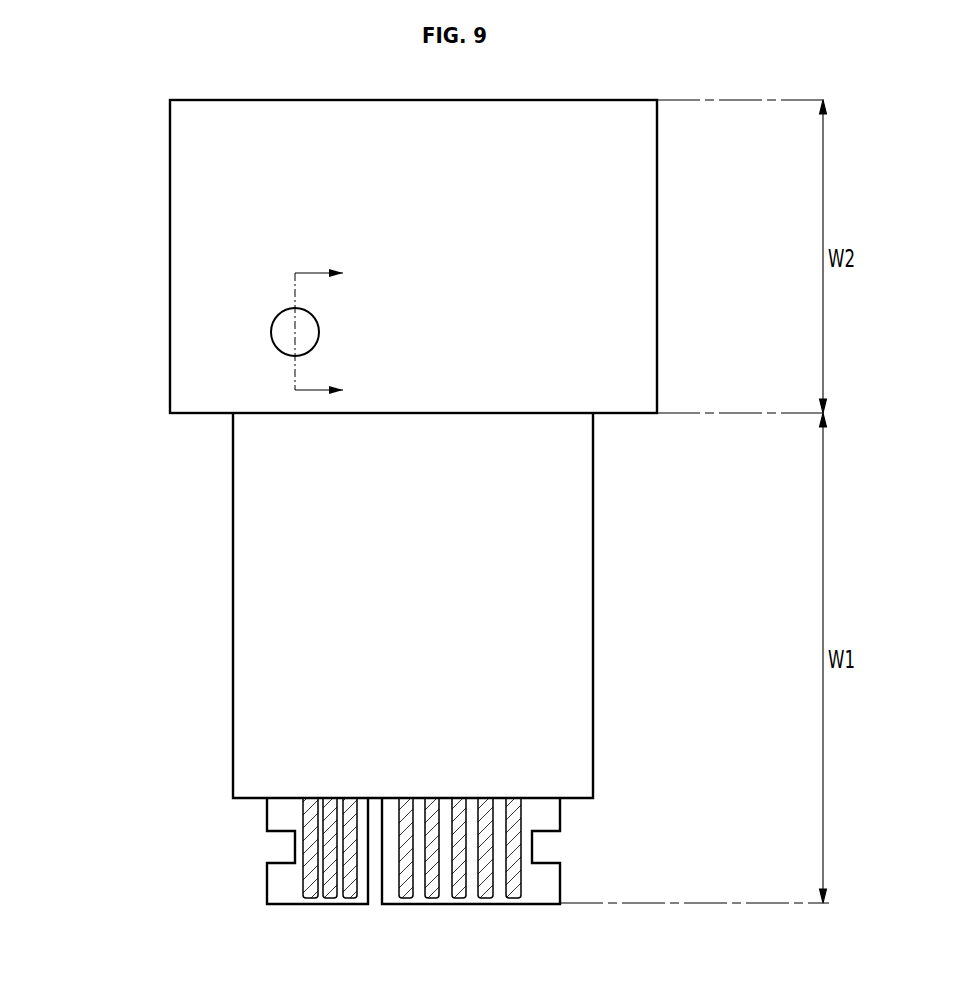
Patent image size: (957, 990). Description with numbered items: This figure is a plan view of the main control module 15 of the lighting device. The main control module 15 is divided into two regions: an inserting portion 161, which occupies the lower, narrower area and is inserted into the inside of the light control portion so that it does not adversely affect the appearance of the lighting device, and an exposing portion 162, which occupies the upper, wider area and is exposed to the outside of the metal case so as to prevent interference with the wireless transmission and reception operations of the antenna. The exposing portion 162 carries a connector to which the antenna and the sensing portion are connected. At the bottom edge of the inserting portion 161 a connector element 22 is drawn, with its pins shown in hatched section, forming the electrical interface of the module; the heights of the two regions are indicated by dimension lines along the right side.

The main control module 15 is at (393, 537).
The inserting portion 161 is at (580, 615).
The exposing portion 162 is at (645, 255).
The connector 22 is at (392, 900).